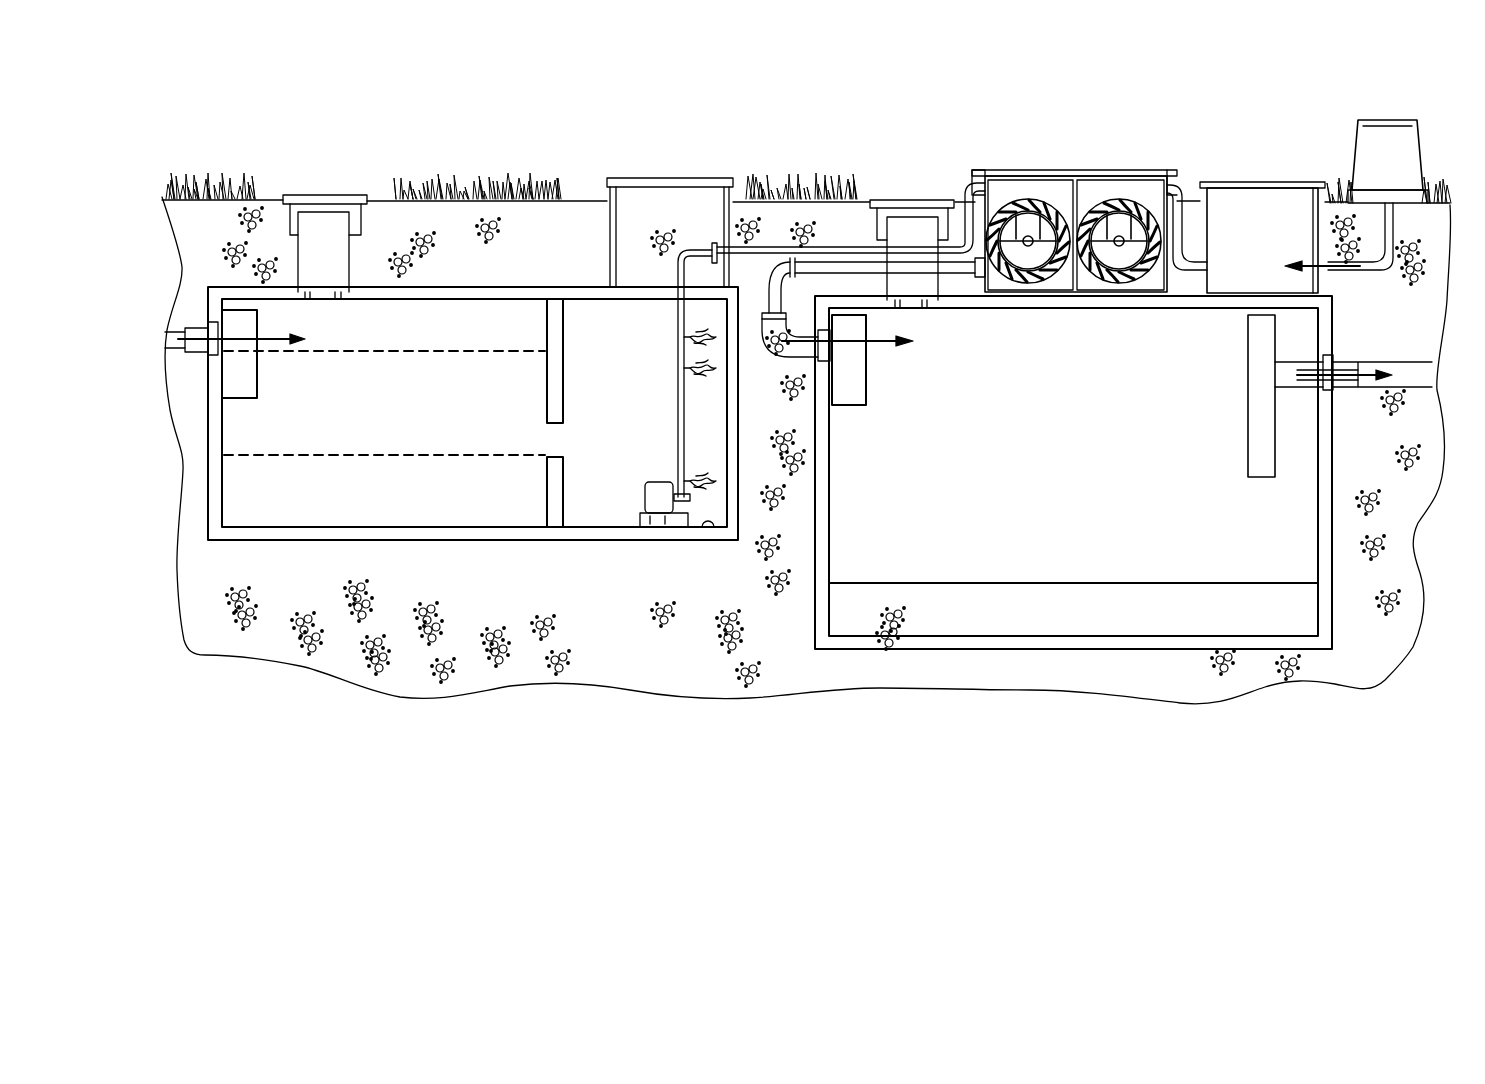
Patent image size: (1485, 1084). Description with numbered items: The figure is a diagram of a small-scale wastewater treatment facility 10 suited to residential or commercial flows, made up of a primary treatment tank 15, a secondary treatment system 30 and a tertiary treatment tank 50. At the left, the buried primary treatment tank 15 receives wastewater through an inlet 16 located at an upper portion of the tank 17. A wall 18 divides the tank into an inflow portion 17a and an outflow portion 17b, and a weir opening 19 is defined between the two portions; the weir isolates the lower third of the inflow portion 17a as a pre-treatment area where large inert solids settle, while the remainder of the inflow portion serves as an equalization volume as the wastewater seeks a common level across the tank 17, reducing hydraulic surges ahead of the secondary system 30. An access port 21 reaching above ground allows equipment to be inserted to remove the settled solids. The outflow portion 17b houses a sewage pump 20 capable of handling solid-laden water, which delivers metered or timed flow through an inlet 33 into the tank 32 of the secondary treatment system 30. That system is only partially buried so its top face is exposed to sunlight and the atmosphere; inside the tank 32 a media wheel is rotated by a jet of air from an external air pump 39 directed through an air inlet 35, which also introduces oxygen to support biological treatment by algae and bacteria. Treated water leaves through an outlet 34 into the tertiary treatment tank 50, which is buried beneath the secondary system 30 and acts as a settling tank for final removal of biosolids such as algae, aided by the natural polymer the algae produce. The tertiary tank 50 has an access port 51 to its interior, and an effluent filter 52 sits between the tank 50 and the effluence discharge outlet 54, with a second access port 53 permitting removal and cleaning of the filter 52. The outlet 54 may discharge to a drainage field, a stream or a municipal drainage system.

The wastewater treatment facility 10 is at (883, 174).
The primary treatment tank 15 is at (425, 287).
The inlet 16 is at (207, 325).
The tank 17 is at (700, 528).
The inflow portion 17a is at (252, 507).
The outflow portion 17b is at (718, 487).
The wall 18 is at (555, 330).
The weir opening 19 is at (557, 457).
The pump 20 is at (655, 498).
The access port 21 is at (318, 195).
The secondary treatment system 30 is at (1056, 185).
The tank 32 is at (993, 170).
The inlet 33 is at (975, 183).
The outlet 34 is at (977, 278).
The air inlet 35 is at (1178, 185).
The air pump 39 is at (1352, 130).
The tertiary treatment tank 50 is at (1293, 531).
The access port 51 is at (915, 200).
The effluent filter 52 is at (1250, 442).
The second access port 53 is at (1243, 182).
The effluence discharge outlet 54 is at (1418, 372).